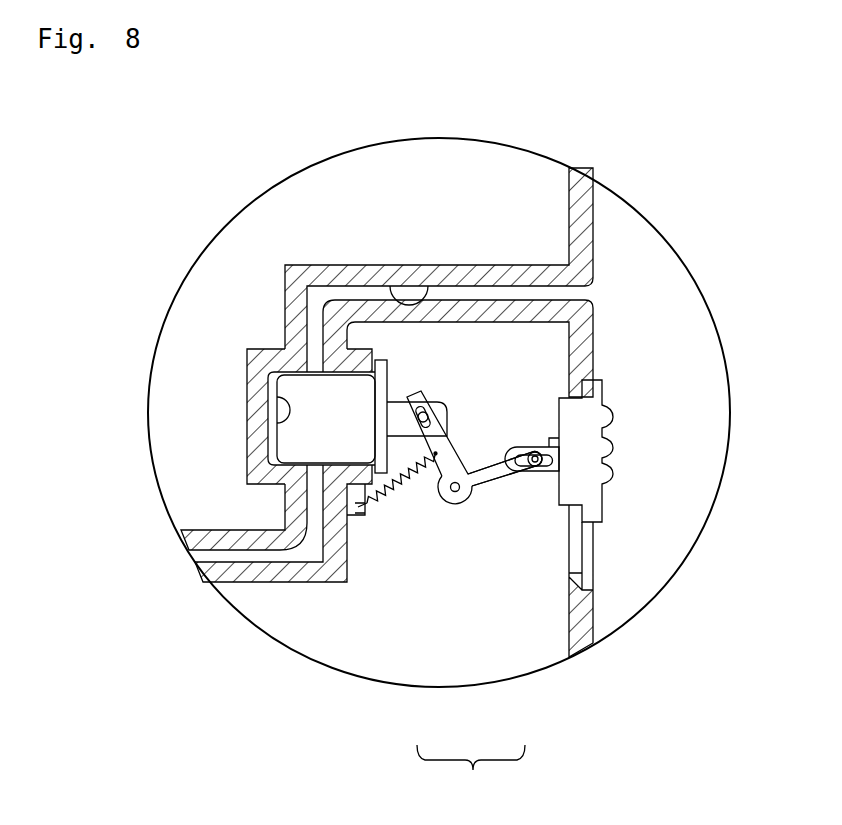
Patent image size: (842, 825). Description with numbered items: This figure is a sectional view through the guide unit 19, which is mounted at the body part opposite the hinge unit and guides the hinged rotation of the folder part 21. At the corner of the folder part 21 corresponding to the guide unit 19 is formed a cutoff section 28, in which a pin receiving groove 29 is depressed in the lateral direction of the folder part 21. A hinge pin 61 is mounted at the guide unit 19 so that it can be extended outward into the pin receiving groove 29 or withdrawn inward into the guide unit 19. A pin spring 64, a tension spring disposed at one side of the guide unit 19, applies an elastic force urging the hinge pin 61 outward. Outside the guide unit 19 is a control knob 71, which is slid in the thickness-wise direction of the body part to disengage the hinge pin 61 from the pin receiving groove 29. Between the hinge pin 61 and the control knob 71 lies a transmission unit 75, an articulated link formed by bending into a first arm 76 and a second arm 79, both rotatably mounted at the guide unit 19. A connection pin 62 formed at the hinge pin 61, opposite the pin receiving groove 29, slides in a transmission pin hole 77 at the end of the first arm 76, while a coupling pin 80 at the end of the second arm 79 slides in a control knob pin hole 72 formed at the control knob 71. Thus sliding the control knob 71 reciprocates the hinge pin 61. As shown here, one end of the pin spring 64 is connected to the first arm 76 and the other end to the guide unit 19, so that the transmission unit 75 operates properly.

The guide unit 19 is at (600, 329).
The folder part 21 is at (600, 214).
The cutoff section 28 is at (387, 265).
The pin receiving groove 29 is at (268, 433).
The hinge pin 61 is at (307, 442).
The connection pin 62 is at (426, 416).
The pin spring 64 is at (382, 502).
The control knob 71 is at (590, 485).
The control knob pin hole 72 is at (556, 440).
The transmission unit 75 is at (471, 773).
The first arm 76 is at (437, 500).
The transmission pin hole 77 is at (410, 397).
The second arm 79 is at (490, 481).
The coupling pin 80 is at (533, 468).